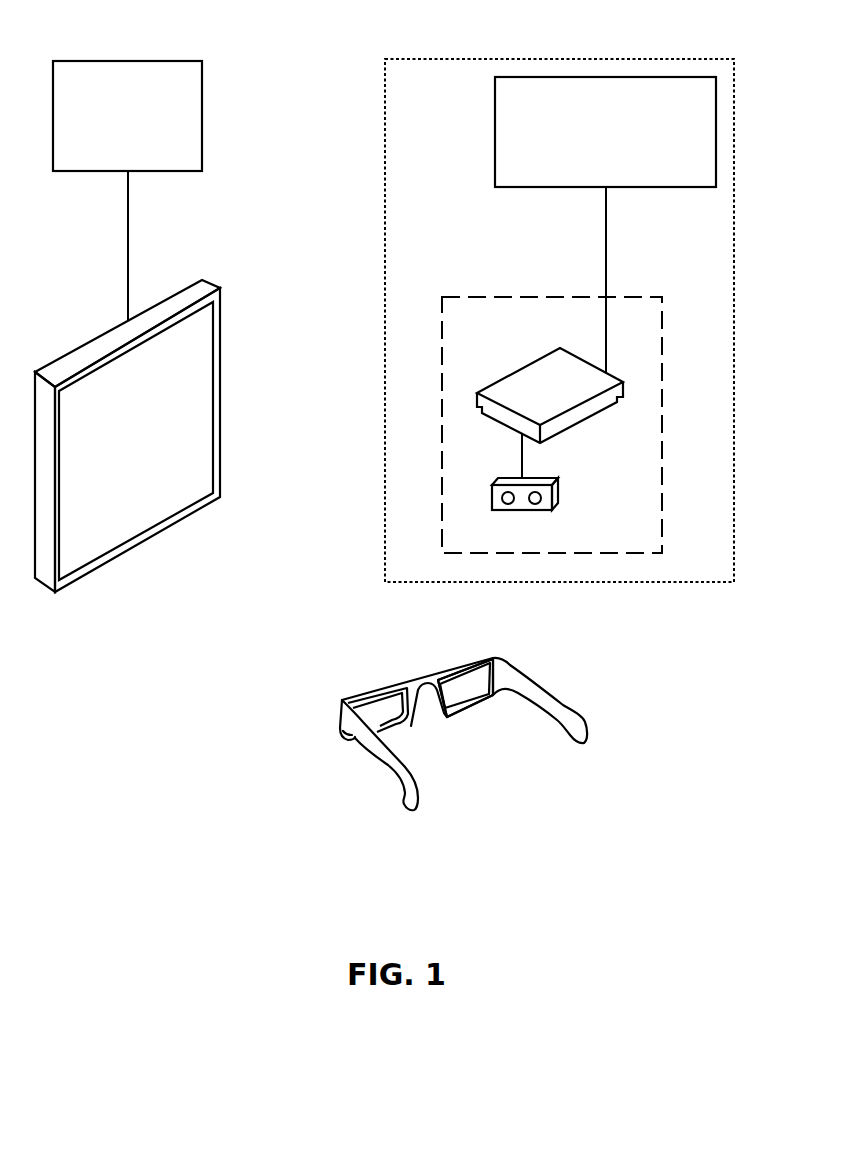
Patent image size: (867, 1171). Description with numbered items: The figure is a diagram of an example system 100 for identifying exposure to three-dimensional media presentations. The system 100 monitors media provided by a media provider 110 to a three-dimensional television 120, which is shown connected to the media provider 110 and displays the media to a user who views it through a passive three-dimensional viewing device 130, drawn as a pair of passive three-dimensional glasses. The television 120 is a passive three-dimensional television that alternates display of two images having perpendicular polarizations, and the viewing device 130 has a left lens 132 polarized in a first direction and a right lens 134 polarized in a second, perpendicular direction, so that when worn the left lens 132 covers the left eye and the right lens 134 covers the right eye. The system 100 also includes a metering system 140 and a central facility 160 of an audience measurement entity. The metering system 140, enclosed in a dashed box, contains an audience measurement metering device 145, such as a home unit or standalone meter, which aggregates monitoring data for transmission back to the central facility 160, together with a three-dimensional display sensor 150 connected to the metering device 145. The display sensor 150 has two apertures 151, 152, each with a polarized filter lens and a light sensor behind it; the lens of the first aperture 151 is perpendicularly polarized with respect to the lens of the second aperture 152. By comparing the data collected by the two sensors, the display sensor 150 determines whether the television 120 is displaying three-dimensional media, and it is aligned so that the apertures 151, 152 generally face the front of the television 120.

The system 100 is at (370, 93).
The media provider 110 is at (203, 124).
The 3D television 120 is at (221, 317).
The 3D viewing device 130 is at (290, 718).
The left lens 132 is at (385, 690).
The right lens 134 is at (460, 669).
The metering system 140 is at (639, 297).
The audience measurement metering device 145 is at (537, 359).
The 3D display sensor 150 is at (560, 486).
The first aperture 151 is at (508, 511).
The second aperture 152 is at (535, 511).
The central facility 160 is at (495, 129).